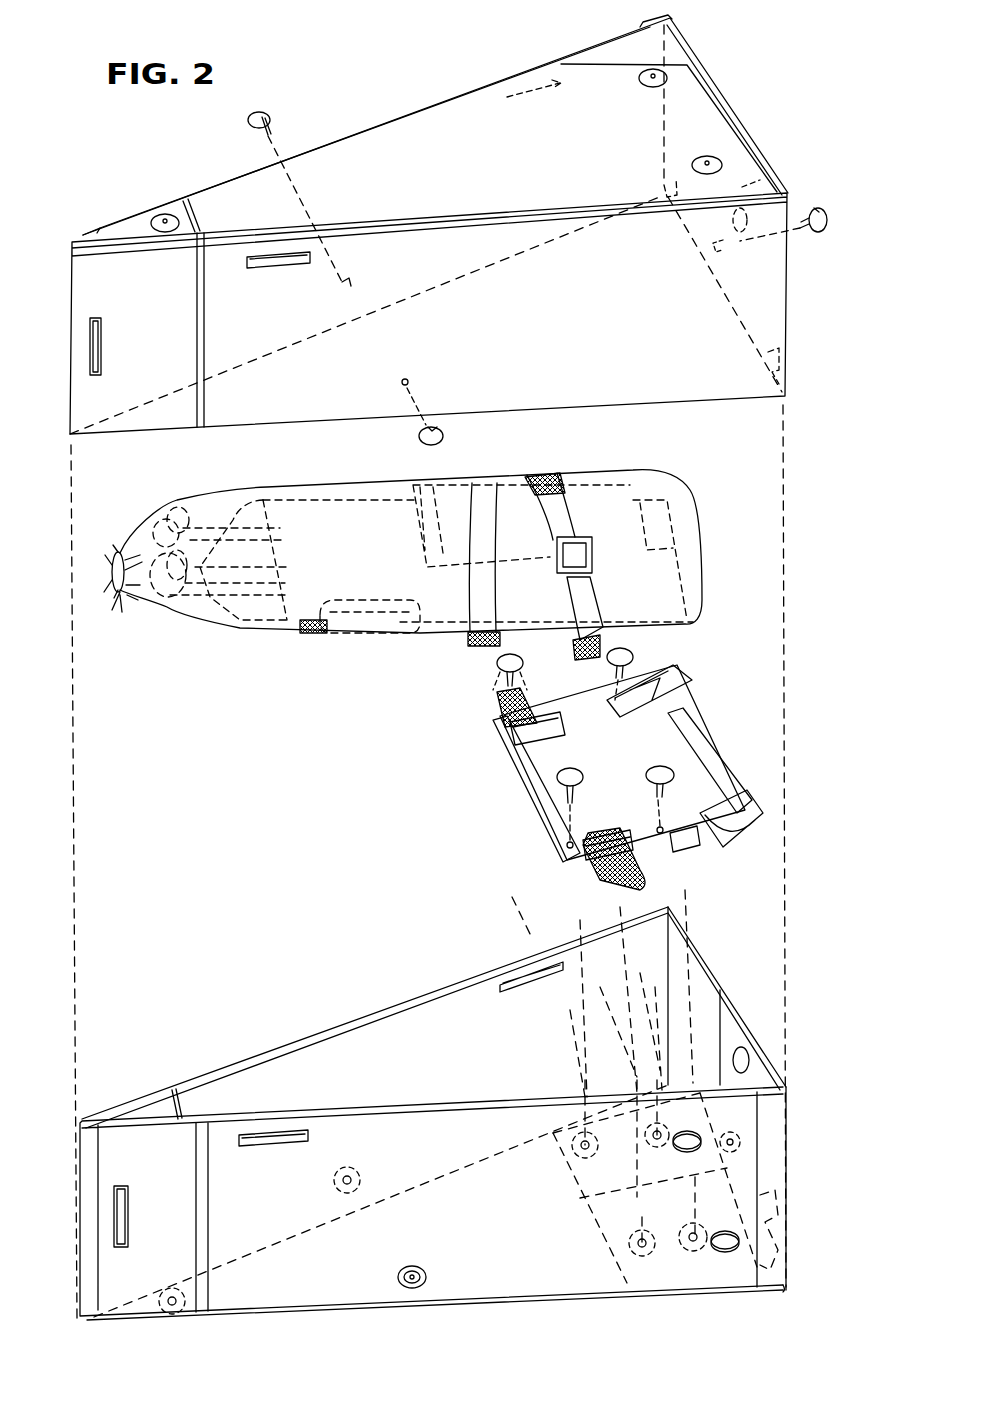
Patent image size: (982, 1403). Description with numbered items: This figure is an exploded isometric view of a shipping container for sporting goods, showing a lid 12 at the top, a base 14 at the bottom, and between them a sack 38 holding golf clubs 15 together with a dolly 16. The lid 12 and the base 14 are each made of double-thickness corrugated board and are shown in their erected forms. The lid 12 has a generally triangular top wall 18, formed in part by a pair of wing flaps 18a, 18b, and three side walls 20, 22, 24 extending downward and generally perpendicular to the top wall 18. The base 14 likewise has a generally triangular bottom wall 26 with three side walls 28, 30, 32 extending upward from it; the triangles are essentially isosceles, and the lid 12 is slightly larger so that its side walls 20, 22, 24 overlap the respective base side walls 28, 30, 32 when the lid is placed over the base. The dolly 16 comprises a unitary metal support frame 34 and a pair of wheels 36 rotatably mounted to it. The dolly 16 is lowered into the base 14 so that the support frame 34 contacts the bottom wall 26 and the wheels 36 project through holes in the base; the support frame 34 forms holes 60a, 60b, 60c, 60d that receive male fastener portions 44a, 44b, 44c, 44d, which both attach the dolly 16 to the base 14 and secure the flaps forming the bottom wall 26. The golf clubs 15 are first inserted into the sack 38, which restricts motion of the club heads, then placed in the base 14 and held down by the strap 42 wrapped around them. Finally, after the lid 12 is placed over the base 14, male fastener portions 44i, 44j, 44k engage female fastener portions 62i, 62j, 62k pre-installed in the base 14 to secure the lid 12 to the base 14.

The lid 12 is at (463, 231).
The base 14 is at (463, 1118).
The golf clubs 15 is at (300, 627).
The dolly 16 is at (578, 754).
The top wall 18 is at (470, 122).
The wing flap 18a is at (700, 118).
The wing flap 18b is at (623, 54).
The side wall 20 is at (695, 368).
The side wall 22 is at (393, 152).
The side wall 24 is at (777, 173).
The bottom wall 26 is at (580, 1297).
The side wall 28 is at (625, 1270).
The side wall 30 is at (441, 1062).
The side wall 32 is at (740, 1000).
The support frame 34 is at (557, 823).
The wheels 36 is at (690, 690).
The sack 38 is at (403, 572).
The strap 42 is at (543, 473).
The male fastener portion 44a is at (547, 773).
The male fastener portion 44b is at (667, 767).
The male fastener portion 44c is at (497, 660).
The male fastener portion 44d is at (620, 643).
The male fastener portion 44i is at (272, 118).
The male fastener portion 44j is at (843, 193).
The male fastener portion 44k is at (444, 434).
The hole 60a is at (567, 863).
The hole 60b is at (662, 837).
The hole 60c is at (510, 730).
The hole 60d is at (667, 713).
The female fastener portion 62i is at (357, 1167).
The female fastener portion 62j is at (740, 1140).
The female fastener portion 62k is at (423, 1280).